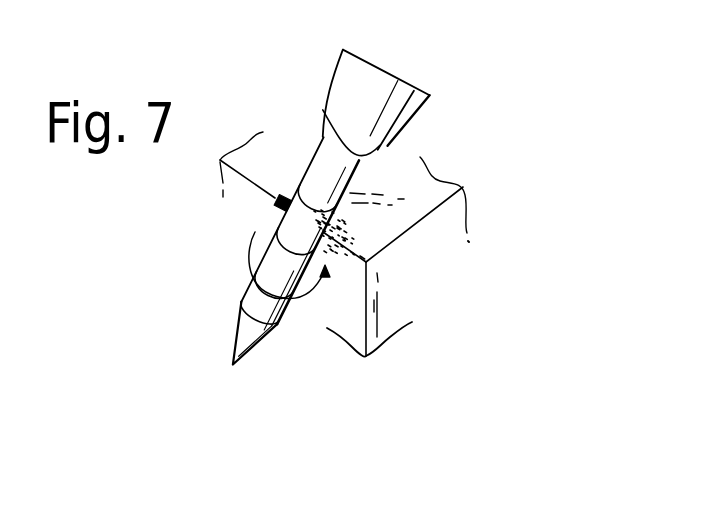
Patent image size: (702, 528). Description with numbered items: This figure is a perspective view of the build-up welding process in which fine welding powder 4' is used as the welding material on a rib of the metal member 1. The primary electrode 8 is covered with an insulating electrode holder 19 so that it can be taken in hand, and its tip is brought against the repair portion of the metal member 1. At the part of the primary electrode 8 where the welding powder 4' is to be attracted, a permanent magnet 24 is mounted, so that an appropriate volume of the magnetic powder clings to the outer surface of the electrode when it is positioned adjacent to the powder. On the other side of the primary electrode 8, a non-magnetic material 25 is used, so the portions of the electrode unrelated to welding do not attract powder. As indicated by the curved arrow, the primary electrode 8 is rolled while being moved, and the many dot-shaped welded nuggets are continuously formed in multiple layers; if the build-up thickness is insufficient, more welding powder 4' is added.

The metal member 1 is at (430, 174).
The fine welding powder 4' is at (392, 244).
The primary electrode 8 is at (314, 162).
The insulating electrode holder 19 is at (413, 110).
The permanent magnet 24 is at (287, 227).
The non-magnetic material 25 is at (297, 293).